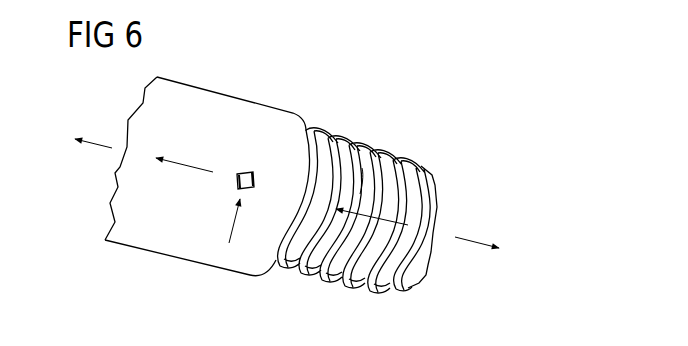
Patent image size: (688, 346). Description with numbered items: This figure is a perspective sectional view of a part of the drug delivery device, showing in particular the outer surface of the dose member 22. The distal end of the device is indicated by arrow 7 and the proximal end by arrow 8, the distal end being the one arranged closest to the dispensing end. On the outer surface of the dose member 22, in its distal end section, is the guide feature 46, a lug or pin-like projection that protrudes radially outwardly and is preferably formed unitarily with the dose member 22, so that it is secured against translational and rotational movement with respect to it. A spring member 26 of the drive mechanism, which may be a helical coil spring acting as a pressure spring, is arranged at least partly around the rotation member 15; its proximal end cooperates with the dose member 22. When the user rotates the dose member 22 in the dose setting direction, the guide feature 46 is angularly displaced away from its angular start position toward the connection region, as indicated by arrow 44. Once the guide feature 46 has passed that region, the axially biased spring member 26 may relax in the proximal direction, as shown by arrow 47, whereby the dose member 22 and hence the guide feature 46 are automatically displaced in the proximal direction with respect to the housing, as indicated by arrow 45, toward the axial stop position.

The dose member 22 is at (198, 100).
The spring member 26 is at (335, 137).
The rotation member 15 is at (362, 168).
The arrow indicating relaxation of the spring member 47 is at (363, 203).
The guide feature 46 is at (247, 171).
The arrow indicating angular displacement of the guide feature 44 is at (233, 216).
The arrow indicating proximal displacement of the guide feature 45 is at (192, 167).
The arrow indicating the proximal end 8 is at (108, 147).
The arrow indicating the distal end 7 is at (470, 238).